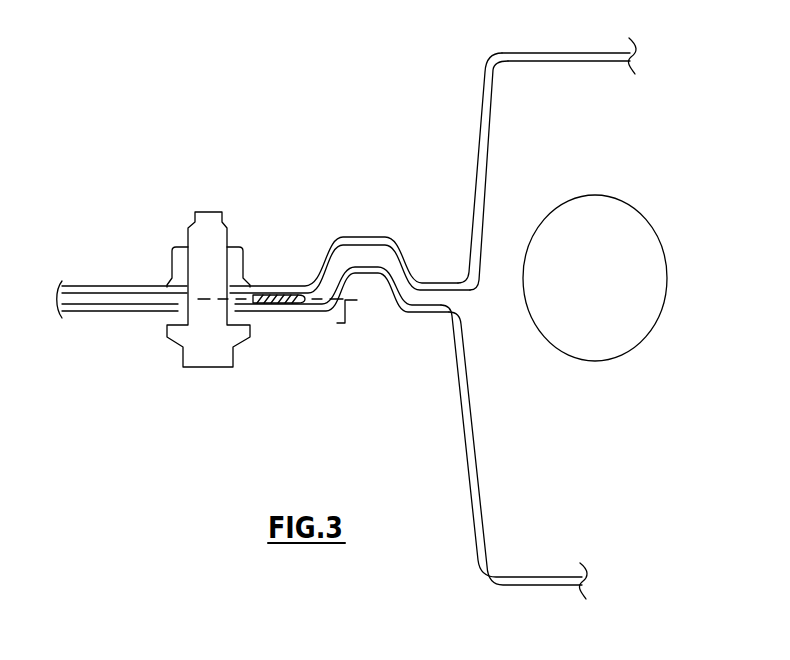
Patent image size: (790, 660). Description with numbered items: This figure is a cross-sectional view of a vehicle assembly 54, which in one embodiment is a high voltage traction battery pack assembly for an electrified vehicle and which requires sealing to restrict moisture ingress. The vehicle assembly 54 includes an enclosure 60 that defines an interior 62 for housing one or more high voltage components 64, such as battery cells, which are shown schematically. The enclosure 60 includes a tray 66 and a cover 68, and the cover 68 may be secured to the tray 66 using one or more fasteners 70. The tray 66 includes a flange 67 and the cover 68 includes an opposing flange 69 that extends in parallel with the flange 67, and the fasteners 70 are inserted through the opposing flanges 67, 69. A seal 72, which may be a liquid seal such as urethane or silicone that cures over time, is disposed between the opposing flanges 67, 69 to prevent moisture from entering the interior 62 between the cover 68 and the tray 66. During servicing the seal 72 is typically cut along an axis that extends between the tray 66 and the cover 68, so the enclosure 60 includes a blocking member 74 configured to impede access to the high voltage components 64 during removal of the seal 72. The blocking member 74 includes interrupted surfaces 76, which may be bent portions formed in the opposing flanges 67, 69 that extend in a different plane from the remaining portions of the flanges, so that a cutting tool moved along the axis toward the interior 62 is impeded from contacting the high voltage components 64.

The vehicle assembly 54 is at (384, 112).
The enclosure 60 is at (484, 54).
The interior 62 is at (584, 444).
The high voltage components 64 is at (657, 230).
The tray 66 is at (467, 456).
The flange 67 is at (118, 311).
The cover 68 is at (480, 142).
The opposing flange 69 is at (108, 289).
The fasteners 70 is at (207, 360).
The seal 72 is at (287, 298).
The blocking member 74 is at (316, 233).
The interrupted surfaces 76 is at (373, 240).